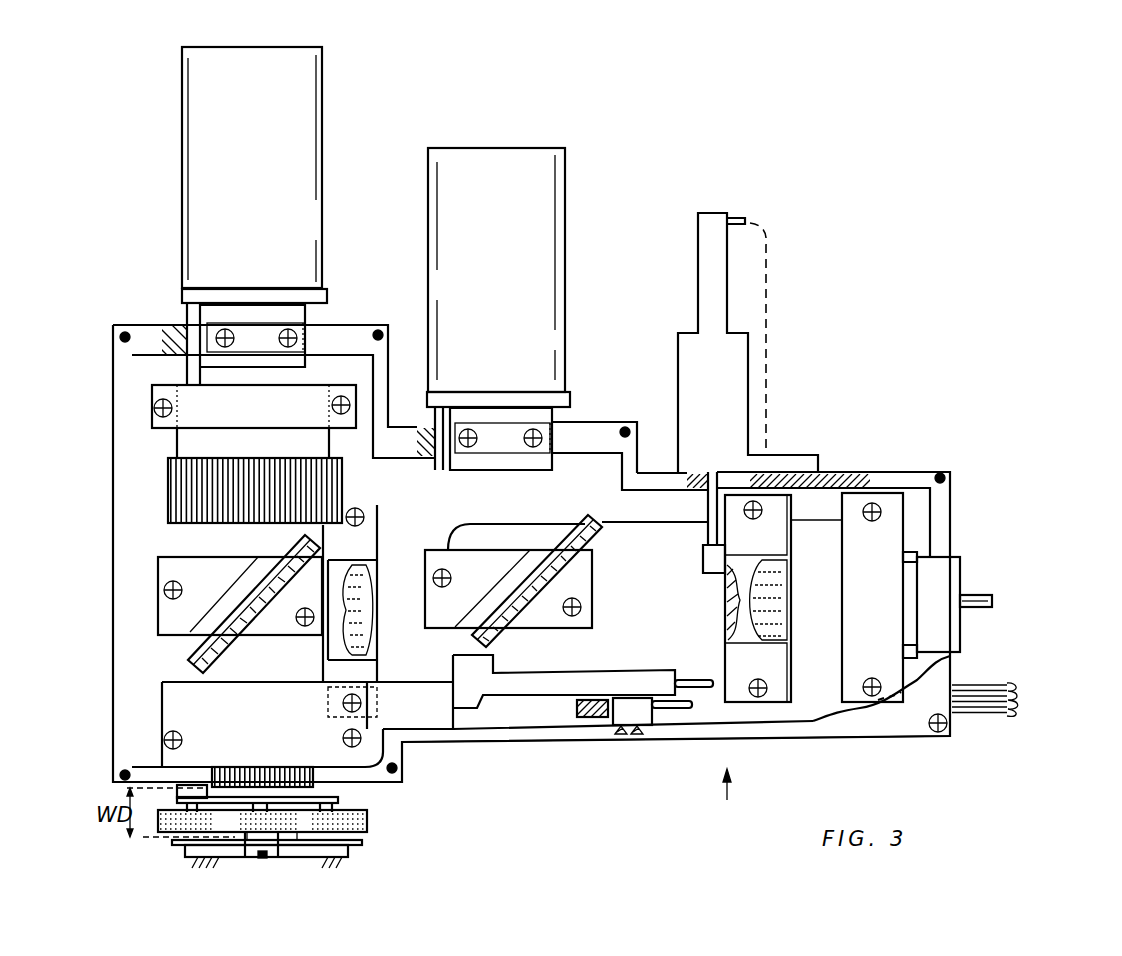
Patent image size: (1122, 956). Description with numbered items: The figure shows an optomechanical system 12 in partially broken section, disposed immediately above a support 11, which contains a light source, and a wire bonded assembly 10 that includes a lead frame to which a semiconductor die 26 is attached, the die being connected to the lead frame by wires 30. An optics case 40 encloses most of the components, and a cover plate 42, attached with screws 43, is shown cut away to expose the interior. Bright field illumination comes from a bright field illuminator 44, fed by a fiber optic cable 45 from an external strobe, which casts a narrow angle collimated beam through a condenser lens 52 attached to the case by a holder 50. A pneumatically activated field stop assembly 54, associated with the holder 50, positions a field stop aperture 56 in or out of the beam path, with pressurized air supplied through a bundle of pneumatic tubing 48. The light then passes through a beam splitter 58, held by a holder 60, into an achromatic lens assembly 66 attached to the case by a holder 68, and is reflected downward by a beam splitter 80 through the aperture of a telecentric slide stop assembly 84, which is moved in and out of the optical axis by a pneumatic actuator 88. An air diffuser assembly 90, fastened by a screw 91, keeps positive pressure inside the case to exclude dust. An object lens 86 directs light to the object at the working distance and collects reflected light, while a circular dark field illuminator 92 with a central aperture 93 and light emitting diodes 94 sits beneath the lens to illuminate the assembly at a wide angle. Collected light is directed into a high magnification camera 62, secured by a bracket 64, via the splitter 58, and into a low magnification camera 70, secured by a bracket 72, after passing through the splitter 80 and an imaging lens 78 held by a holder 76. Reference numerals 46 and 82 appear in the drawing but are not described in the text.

The wire bonded assembly 10 is at (262, 858).
The support 11 is at (185, 853).
The optomechanical system 12 is at (751, 806).
The semiconductor die 26 is at (283, 857).
The wires 30 is at (245, 857).
The optics case 40 is at (793, 737).
The cover plate 42 is at (903, 737).
The screws 43 is at (957, 727).
The bright field illuminator 44 is at (923, 633).
The fiber optic cable 45 is at (985, 600).
The detector holder 46 is at (897, 537).
The pneumatic tubing 48 is at (742, 215).
The holder 50 is at (777, 517).
The condenser lens 52 is at (782, 555).
The field stop assembly 54 is at (742, 338).
The field stop aperture 56 is at (727, 619).
The beam splitter 58 is at (608, 515).
The holder 60 is at (496, 550).
The high magnification camera 62 is at (550, 240).
The bracket 64 is at (572, 396).
The achromatic lens assembly 66 is at (380, 560).
The holder 68 is at (364, 512).
The low magnification camera 70 is at (192, 168).
The bracket 72 is at (182, 297).
The holder 76 is at (152, 414).
The imaging lens 78 is at (170, 498).
The beam splitter 80 is at (300, 540).
The mirror mount 82 is at (158, 580).
The telecentric slide stop assembly 84 is at (162, 732).
The object lens 86 is at (243, 770).
The pneumatic actuator 88 is at (528, 695).
The air diffuser assembly 90 is at (628, 735).
The screw 91 is at (650, 735).
The dark field illuminator 92 is at (367, 816).
The central aperture 93 is at (307, 830).
The light emitting diodes 94 is at (367, 822).